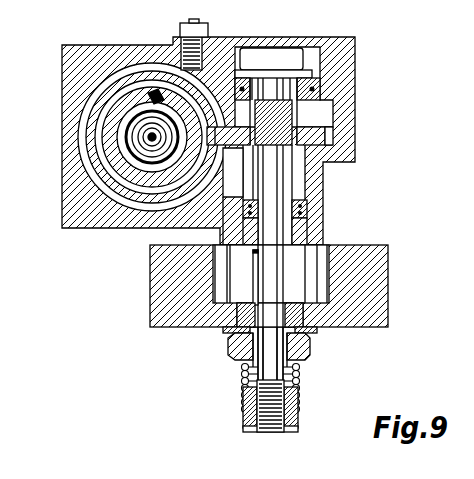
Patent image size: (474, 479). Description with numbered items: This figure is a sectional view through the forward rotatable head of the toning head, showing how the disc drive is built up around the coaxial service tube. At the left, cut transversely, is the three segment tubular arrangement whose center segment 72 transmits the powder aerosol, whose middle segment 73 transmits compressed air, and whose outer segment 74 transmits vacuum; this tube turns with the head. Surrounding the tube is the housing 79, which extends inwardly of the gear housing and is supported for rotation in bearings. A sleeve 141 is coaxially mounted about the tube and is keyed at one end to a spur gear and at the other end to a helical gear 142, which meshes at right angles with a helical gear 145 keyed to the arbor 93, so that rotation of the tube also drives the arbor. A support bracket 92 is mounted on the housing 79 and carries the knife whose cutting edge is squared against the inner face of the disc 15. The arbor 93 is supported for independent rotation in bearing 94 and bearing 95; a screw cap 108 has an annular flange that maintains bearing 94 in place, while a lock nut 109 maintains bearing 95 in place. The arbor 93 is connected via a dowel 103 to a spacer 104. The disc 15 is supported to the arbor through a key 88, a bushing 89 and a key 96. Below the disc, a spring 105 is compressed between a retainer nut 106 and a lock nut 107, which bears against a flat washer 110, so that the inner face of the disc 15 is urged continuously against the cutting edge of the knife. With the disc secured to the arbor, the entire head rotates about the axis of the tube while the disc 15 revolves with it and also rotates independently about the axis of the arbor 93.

The housing 79 is at (75, 62).
The outer segment 74 is at (100, 97).
The helical gear 142 is at (97, 130).
The middle segment 73 is at (115, 160).
The center segment 72 is at (101, 187).
The sleeve 141 is at (157, 92).
The screw cap 108 is at (256, 38).
The support bracket 92 is at (356, 57).
The bearing 94 is at (335, 92).
The dowel 103 is at (300, 104).
The spacer 104 is at (244, 127).
The helical gear 145 is at (335, 148).
The lock nut 109 is at (306, 220).
The bearing 95 is at (300, 240).
The disc 15 is at (378, 280).
The key 96 is at (254, 282).
The arbor 93 is at (284, 276).
The bushing 89 is at (300, 302).
The key 88 is at (242, 318).
The flat washer 110 is at (317, 331).
The lock nut 107 is at (311, 352).
The spring 105 is at (243, 384).
The retainer nut 106 is at (292, 420).